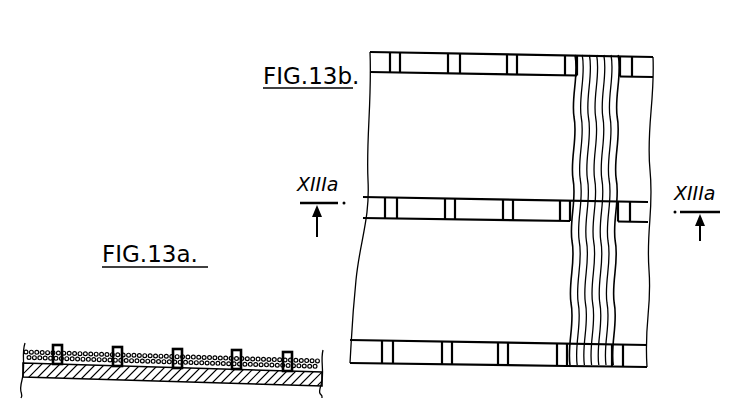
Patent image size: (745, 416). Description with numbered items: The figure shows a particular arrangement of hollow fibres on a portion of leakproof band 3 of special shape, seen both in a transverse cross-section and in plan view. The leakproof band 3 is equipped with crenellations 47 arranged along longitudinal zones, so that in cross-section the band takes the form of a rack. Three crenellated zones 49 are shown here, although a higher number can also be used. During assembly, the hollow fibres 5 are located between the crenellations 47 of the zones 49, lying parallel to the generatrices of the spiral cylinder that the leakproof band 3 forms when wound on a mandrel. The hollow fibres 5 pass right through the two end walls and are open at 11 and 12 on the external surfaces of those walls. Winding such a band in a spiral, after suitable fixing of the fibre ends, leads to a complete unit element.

In FIG. 13a, the leakproof band 3 is at (98, 348).
In FIG. 13a, the crenellations 47 is at (175, 345).
In FIG. 13b, the crenellations 47 is at (507, 357).
In FIG. 13a, the hollow fibres 5 is at (254, 350).
In FIG. 13b, the hollow fibres 5 is at (501, 188).
In FIG. 13b, the open end of hollow fibres 11 is at (595, 54).
In FIG. 13b, the crenellated zones 49 is at (480, 172).
In FIG. 13b, the open end of hollow fibres 12 is at (588, 368).